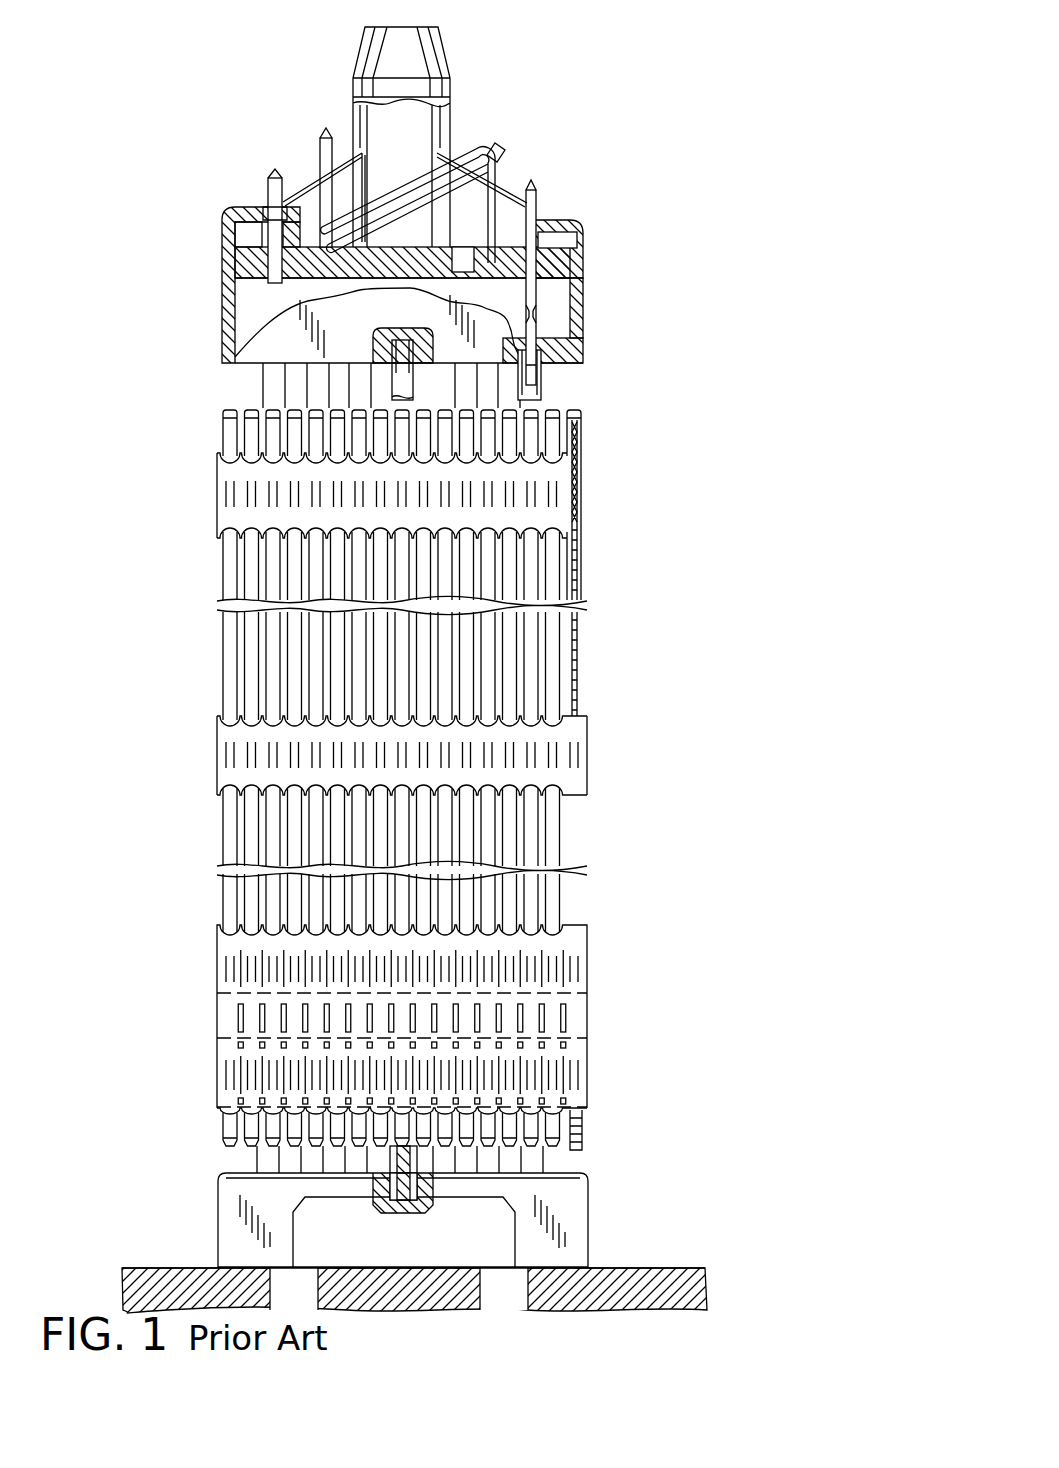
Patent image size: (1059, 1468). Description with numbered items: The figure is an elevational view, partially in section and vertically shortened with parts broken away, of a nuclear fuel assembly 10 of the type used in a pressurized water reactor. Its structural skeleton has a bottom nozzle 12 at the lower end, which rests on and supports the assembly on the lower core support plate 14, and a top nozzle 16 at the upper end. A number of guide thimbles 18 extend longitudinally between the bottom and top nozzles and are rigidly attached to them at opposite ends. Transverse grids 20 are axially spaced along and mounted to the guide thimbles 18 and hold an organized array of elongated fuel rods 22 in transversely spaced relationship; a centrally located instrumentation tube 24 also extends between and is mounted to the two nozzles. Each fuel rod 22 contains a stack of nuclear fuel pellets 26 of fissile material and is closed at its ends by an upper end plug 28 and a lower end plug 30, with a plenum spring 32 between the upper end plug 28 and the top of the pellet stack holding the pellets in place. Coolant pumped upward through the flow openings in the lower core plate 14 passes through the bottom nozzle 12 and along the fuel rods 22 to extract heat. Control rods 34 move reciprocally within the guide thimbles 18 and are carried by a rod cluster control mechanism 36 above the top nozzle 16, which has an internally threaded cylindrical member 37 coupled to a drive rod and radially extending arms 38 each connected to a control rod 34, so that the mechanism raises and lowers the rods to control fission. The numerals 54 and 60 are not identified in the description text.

The fuel assembly 10 is at (668, 282).
The bottom nozzle 12 is at (592, 1219).
The lower core support plate 14 is at (700, 1266).
The top nozzle 16 is at (585, 266).
The guide thimbles 18 is at (263, 392).
The transverse grids 20 is at (217, 490).
The fuel rods 22 is at (217, 665).
The instrumentation tube 24 is at (402, 1210).
The nuclear fuel pellets 26 is at (580, 547).
The upper end plug 28 is at (583, 415).
The lower end plug 30 is at (583, 1130).
The plenum spring 32 is at (583, 470).
The control rods 34 is at (540, 328).
The rod cluster control mechanism 36 is at (497, 130).
The internally threaded cylindrical member 37 is at (453, 118).
The arms 38 is at (312, 178).
The dimples 54 is at (566, 1101).
The debris filter grid 60 is at (587, 989).